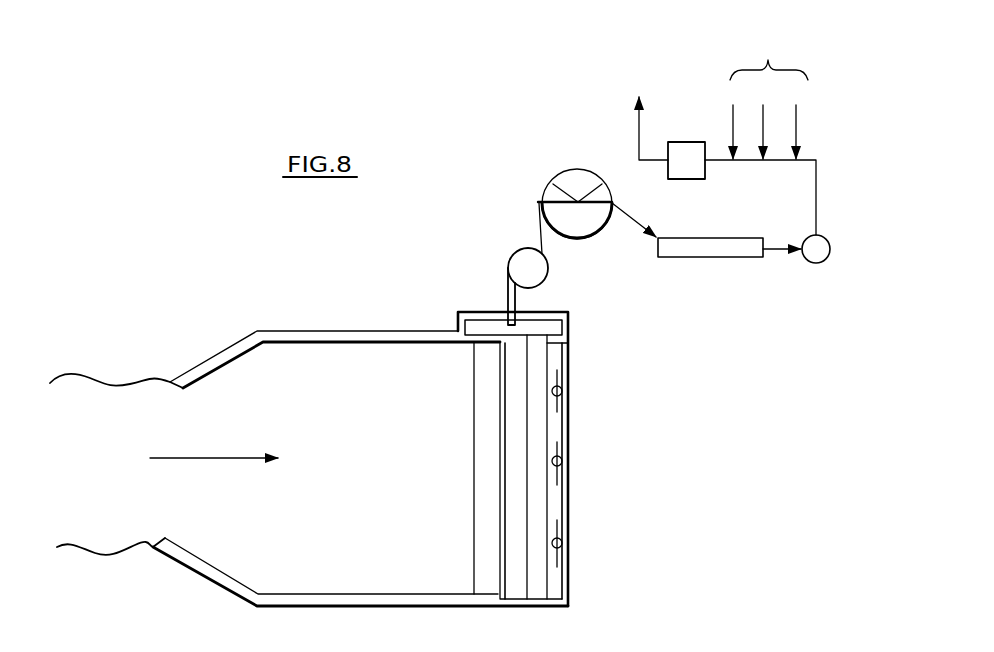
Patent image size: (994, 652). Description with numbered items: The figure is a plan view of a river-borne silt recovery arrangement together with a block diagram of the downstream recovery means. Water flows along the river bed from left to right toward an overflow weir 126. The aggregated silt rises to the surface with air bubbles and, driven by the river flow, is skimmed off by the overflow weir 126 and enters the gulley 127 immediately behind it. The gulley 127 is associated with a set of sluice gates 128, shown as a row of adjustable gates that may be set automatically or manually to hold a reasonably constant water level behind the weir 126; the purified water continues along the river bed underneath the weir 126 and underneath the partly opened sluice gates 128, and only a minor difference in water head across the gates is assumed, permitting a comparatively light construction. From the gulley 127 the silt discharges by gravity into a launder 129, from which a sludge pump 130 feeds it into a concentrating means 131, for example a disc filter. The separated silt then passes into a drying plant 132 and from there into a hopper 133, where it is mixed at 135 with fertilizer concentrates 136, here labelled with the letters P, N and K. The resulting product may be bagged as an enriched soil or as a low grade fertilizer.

The overflow weir 126 is at (488, 513).
The gulley 127 is at (510, 443).
The sluice gates 128 is at (565, 543).
The launder 129 is at (477, 323).
The sludge pump 130 is at (522, 263).
The concentrating means 131 is at (538, 203).
The drying plant 132 is at (670, 248).
The hopper 133 is at (812, 252).
The mixing point 135 is at (685, 170).
The fertilizer concentrates 136 is at (766, 95).